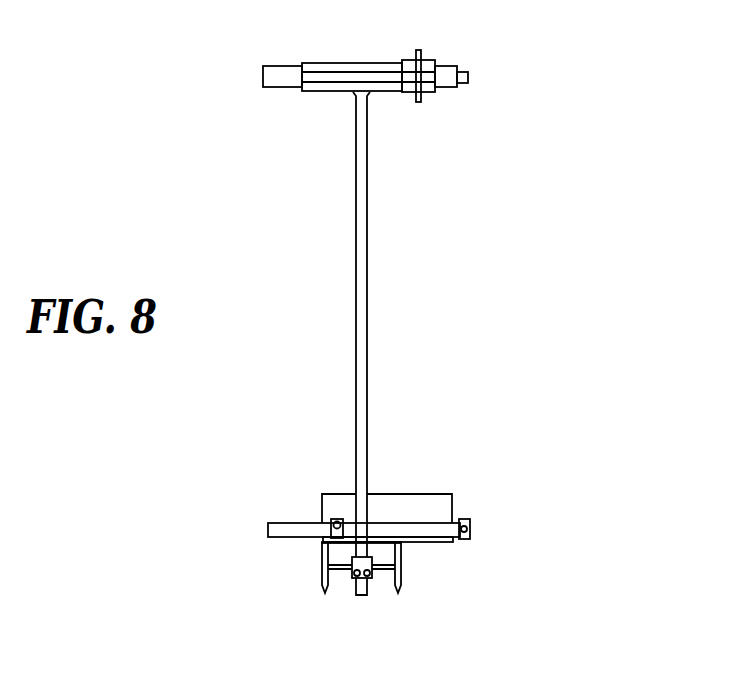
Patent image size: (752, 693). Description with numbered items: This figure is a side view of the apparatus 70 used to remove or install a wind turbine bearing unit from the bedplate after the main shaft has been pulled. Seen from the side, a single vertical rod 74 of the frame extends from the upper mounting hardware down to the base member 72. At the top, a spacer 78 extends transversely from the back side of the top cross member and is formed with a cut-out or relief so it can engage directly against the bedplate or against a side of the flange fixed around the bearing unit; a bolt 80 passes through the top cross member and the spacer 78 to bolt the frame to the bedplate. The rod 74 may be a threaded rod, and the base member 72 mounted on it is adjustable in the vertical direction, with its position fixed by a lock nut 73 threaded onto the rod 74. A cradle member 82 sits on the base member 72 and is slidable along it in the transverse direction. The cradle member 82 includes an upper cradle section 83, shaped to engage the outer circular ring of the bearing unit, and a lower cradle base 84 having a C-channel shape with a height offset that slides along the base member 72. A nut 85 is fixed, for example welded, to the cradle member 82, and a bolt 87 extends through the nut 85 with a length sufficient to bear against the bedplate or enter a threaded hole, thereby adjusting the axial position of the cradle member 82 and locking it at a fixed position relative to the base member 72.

The apparatus 70 is at (545, 181).
The base member 72 is at (403, 578).
The lock nuts 73 is at (370, 580).
The vertical rods 74 is at (368, 279).
The spacer 78 is at (330, 63).
The bolt 80 is at (466, 73).
The cradle member 82 is at (416, 477).
The upper cradle section 83 is at (452, 508).
The cradle base 84 is at (322, 557).
The nut 85 is at (337, 520).
The bolt 87 is at (470, 537).